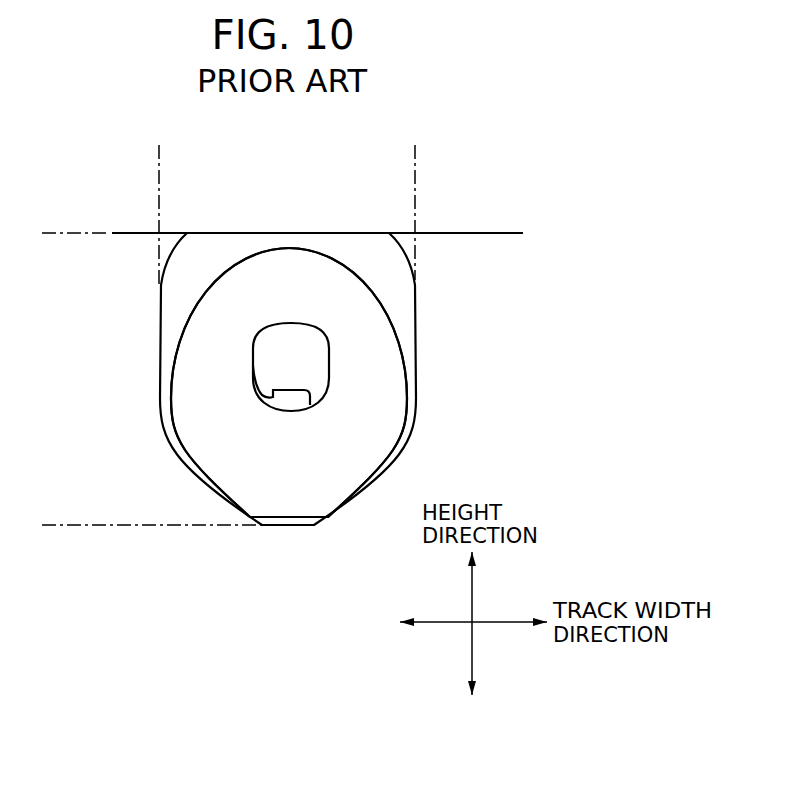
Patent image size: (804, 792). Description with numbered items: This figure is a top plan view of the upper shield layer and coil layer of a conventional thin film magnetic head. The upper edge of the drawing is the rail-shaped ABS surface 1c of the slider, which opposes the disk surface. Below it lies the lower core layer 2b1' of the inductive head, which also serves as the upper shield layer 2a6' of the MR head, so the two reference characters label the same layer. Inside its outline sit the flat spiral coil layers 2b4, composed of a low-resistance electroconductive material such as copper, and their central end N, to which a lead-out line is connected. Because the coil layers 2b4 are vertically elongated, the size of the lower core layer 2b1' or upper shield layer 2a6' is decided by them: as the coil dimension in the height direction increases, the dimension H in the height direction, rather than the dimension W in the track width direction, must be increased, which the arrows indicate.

The ABS surface 1c is at (470, 229).
The upper shield layer 2a6' is at (376, 382).
The lower core layer 2b1' is at (376, 382).
The coil layers 2b4 is at (408, 349).
The central end N is at (292, 402).
The dimension in the track width direction W is at (415, 161).
The dimension in the height direction H is at (63, 235).